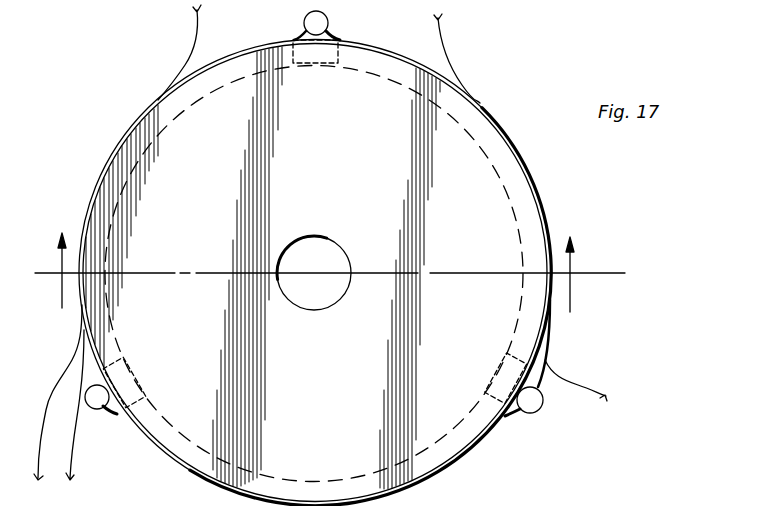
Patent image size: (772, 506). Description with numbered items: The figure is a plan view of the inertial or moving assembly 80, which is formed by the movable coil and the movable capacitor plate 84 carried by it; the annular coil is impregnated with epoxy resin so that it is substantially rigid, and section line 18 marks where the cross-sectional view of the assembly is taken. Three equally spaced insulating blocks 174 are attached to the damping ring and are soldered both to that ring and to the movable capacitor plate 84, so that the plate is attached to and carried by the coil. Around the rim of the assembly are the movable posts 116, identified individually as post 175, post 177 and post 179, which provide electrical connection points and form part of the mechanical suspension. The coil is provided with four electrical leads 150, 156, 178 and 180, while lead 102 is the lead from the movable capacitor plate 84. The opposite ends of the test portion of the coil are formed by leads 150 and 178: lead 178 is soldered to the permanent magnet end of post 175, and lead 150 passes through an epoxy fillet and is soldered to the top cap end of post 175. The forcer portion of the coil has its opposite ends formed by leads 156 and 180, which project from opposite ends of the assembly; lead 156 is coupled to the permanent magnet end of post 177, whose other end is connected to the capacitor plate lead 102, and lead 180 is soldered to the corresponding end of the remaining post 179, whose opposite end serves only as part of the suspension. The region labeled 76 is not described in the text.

The section line 18- 18 is at (327, 272).
The canopy 76 is at (515, 13).
The movable assembly 80 is at (548, 184).
The movable capacitor plate 84 is at (247, 162).
The movable capacitor plate lead 102 is at (68, 452).
The movable posts 116 is at (330, 25).
The lead 150 is at (447, 42).
The lead 156 is at (58, 395).
The insulating blocks 174 is at (318, 63).
The movable post 175 is at (303, 22).
The movable post 177 is at (108, 417).
The lead 178 is at (196, 36).
The movable post 179 is at (548, 405).
The lead 180 is at (577, 381).